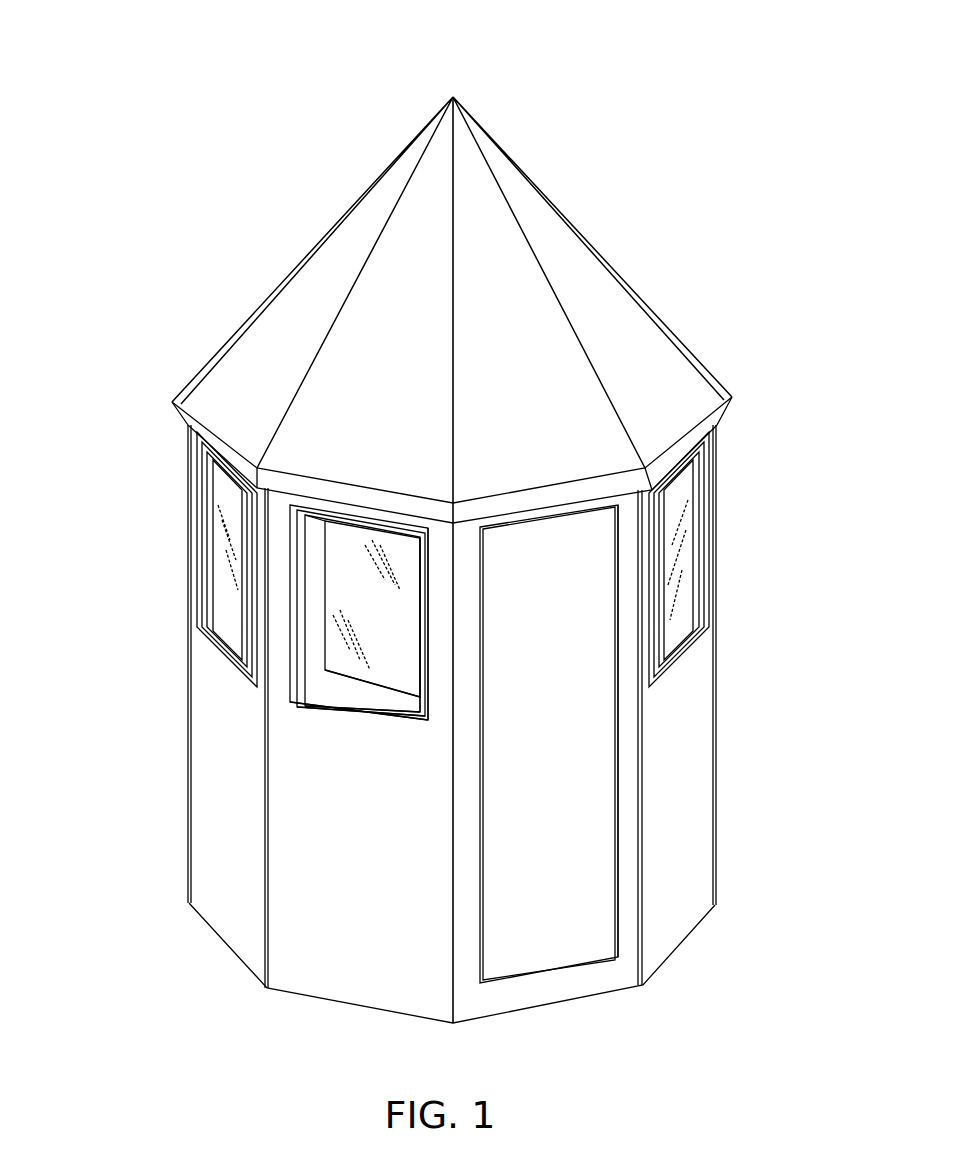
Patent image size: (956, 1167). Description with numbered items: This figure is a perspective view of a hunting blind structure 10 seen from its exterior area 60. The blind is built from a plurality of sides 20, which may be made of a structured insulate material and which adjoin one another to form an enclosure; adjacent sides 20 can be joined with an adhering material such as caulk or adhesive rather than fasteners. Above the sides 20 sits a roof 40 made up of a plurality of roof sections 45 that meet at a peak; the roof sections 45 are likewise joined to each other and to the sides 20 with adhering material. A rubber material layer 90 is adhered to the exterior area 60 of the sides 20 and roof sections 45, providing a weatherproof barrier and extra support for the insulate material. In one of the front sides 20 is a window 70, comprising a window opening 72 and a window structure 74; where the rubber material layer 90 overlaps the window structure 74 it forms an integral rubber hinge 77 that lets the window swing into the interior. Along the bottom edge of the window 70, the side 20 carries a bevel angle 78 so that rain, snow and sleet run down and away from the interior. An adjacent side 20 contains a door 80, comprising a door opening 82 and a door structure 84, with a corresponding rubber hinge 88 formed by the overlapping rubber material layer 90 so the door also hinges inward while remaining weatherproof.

The hunting blind structure 10 is at (424, 535).
The sides 20 is at (212, 772).
The roof 40 is at (410, 560).
The roof sections 45 is at (565, 213).
The exterior area 60 is at (424, 684).
The window 70 is at (153, 566).
The window opening 72 is at (359, 657).
The window structure 74 is at (358, 640).
The rubber hinge 77 is at (428, 685).
The bevel angle 78 is at (362, 707).
The door 80 is at (576, 780).
The door opening 82 is at (488, 942).
The door structure 84 is at (539, 718).
The rubber hinge 88 is at (613, 775).
The rubber material layer 90 is at (373, 338).